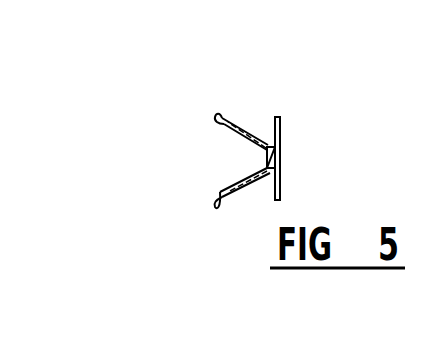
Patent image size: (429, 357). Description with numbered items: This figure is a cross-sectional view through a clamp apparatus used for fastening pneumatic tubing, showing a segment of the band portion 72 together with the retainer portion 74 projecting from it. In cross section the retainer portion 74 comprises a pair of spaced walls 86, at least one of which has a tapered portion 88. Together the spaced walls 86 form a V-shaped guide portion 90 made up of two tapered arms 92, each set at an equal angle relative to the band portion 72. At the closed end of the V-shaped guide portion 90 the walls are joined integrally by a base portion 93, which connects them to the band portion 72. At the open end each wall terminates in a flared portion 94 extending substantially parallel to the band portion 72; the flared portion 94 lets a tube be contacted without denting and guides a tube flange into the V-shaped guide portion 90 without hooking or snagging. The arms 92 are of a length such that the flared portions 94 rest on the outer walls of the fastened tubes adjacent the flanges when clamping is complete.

The band portion 72 is at (281, 123).
The retainer portion 74 is at (219, 162).
The spaced walls 86 is at (233, 118).
The tapered portion 88 is at (264, 150).
The V-shaped guide portion 90 is at (214, 203).
The tapered arms 92 is at (264, 138).
The base portion 93 is at (266, 169).
The flared portion 94 is at (212, 116).